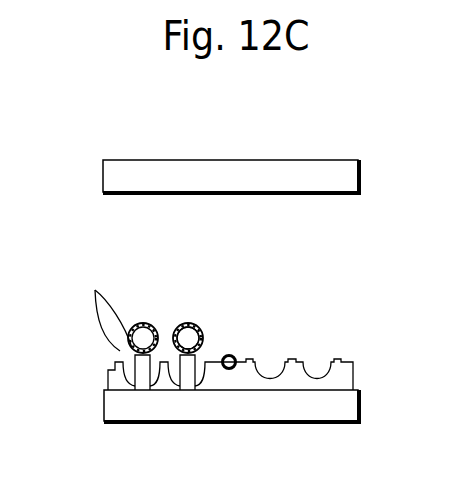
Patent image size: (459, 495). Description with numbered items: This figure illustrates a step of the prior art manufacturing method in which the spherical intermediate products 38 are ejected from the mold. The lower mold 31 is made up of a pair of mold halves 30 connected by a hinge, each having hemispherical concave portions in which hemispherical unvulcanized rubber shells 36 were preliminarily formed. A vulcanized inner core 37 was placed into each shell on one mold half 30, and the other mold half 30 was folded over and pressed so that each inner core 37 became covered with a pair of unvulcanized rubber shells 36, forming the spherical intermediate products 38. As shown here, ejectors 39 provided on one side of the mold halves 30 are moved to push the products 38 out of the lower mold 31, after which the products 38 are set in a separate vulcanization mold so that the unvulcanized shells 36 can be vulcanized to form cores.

The mold halves 30 is at (107, 377).
The lower mold 31 is at (271, 370).
The unvulcanized rubber shells 36 is at (104, 305).
The inner core 37 is at (188, 340).
The spherical intermediate products 38 is at (150, 314).
The ejectors 39 is at (143, 380).